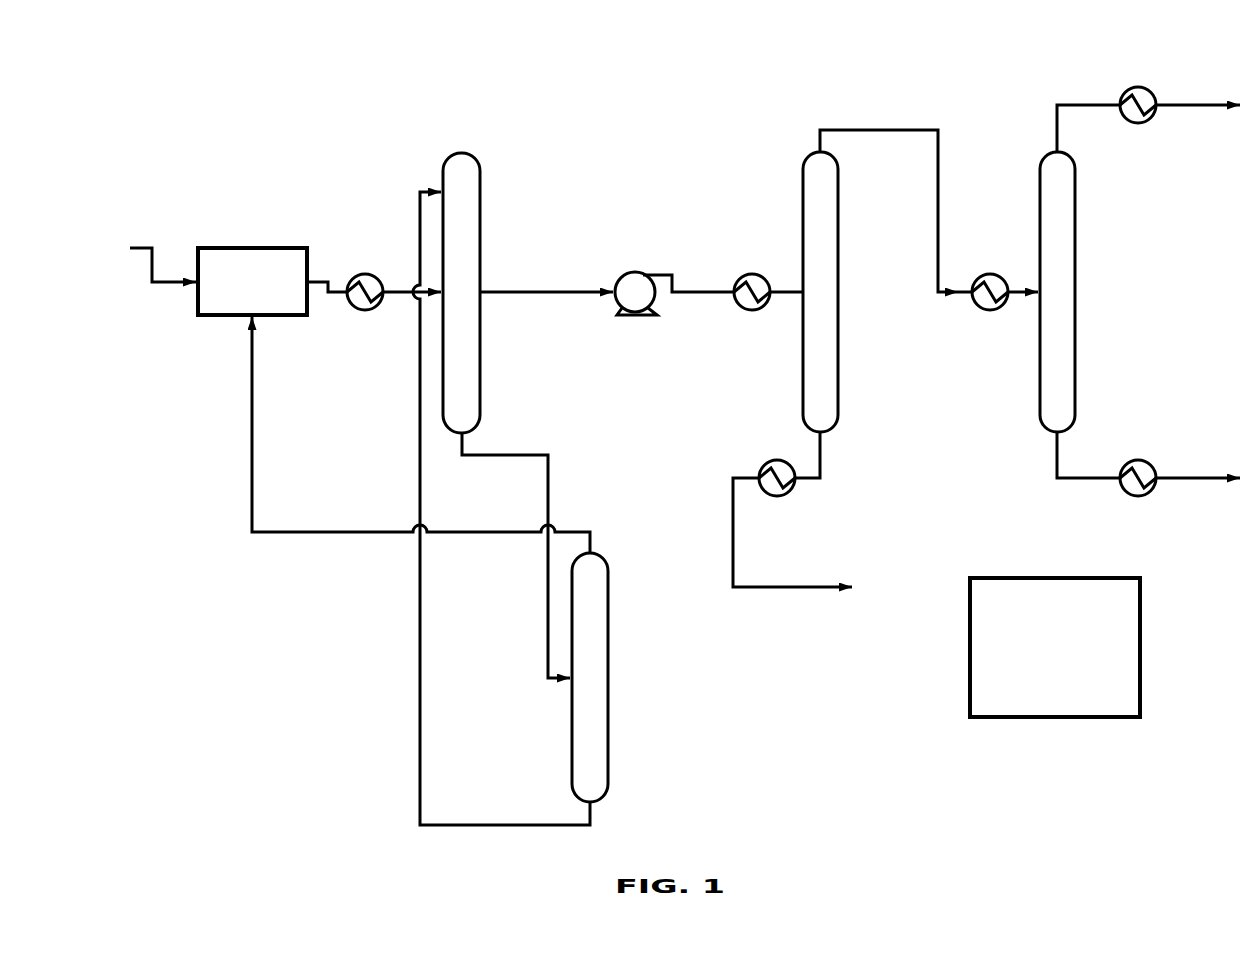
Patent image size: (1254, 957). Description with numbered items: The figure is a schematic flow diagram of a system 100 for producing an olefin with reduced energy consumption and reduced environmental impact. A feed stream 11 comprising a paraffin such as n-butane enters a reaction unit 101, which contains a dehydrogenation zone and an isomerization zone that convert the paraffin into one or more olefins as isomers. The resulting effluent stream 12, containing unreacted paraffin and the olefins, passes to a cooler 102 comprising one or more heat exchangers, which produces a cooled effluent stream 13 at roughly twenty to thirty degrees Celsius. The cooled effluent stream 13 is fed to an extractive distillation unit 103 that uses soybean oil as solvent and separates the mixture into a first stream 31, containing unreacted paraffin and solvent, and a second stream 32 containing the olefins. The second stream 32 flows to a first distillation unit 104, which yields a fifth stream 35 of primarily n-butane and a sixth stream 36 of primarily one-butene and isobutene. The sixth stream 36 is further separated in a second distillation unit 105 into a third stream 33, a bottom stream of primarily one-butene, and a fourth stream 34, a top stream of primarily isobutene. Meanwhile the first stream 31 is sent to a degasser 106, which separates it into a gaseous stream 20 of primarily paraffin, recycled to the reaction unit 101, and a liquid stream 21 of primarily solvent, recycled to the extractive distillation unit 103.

The system 100 is at (665, 50).
The reaction unit 101 is at (258, 246).
The cooler 102 is at (368, 312).
The extractive distillation unit 103 is at (480, 190).
The first distillation unit 104 is at (838, 224).
The second distillation unit 105 is at (1075, 225).
The degasser 106 is at (608, 626).
The feed stream 11 is at (170, 284).
The effluent stream 12 is at (334, 294).
The cooled effluent stream 13 is at (401, 294).
The gaseous stream 20 is at (492, 535).
The liquid stream 21 is at (418, 475).
The first stream 31 is at (550, 477).
The second stream 32 is at (536, 296).
The third stream 33 is at (1096, 482).
The fourth stream 34 is at (1203, 110).
The fifth stream 35 is at (820, 456).
The sixth stream 36 is at (938, 160).